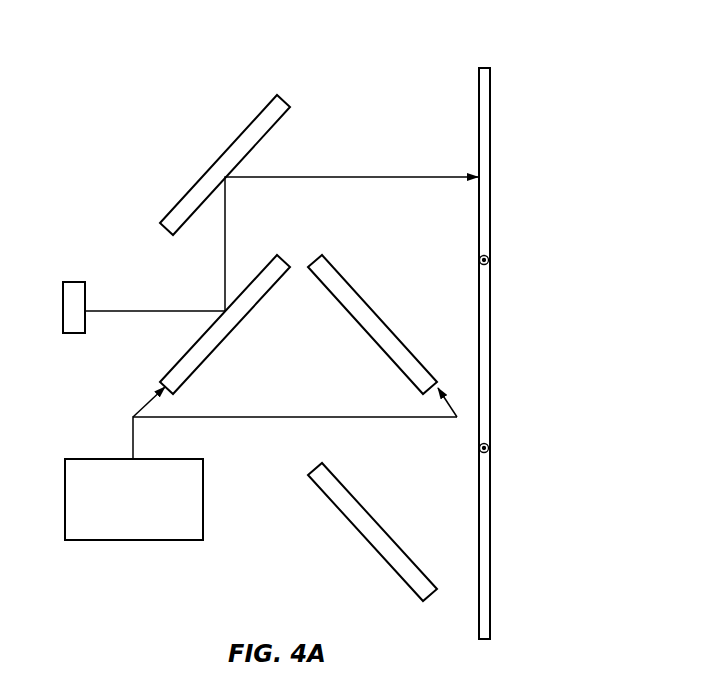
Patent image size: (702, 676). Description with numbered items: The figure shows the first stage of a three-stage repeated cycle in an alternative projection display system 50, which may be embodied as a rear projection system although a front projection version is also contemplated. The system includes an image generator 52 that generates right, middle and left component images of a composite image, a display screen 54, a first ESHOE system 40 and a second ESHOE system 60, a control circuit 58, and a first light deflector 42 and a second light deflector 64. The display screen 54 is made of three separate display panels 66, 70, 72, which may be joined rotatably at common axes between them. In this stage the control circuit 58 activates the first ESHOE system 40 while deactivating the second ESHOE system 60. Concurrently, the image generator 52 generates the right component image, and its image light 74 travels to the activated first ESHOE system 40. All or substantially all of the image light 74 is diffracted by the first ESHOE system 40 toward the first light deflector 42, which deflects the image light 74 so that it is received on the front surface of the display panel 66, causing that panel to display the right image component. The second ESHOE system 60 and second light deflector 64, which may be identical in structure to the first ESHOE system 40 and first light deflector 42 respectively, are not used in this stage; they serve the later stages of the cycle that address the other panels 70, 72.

The projection display system 50 is at (590, 70).
The image generator 52 is at (75, 282).
The display screen 54 is at (488, 64).
The control circuit 58 is at (106, 459).
The first ESHOE system 40 is at (257, 275).
The first light deflector 42 is at (228, 147).
The second ESHOE system 60 is at (332, 263).
The second light deflector 64 is at (362, 505).
The display panel 66 is at (491, 178).
The display panel 70 is at (494, 318).
The display panel 72 is at (491, 484).
The image light 74 is at (195, 311).